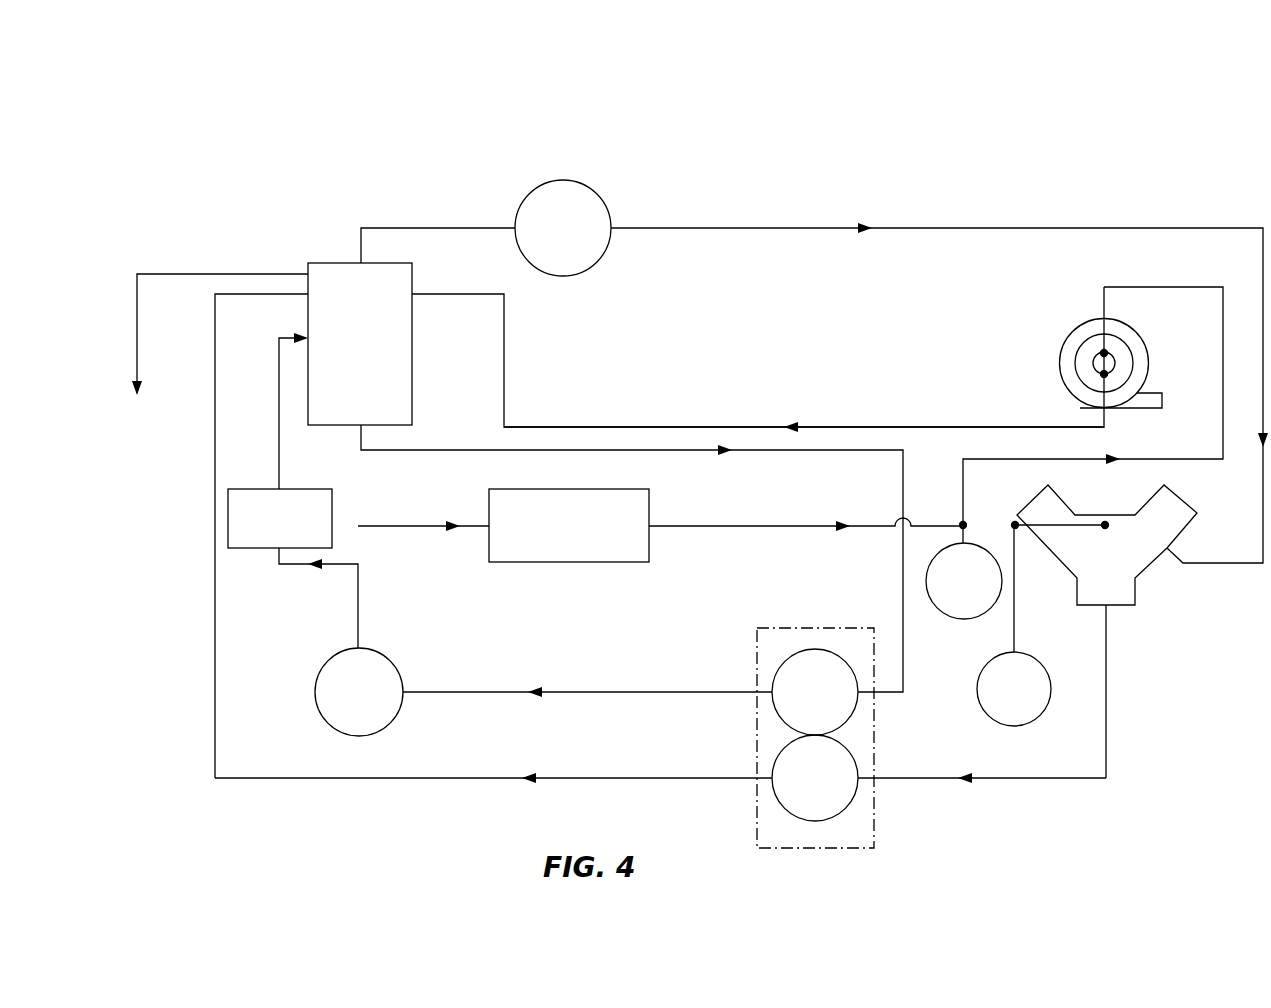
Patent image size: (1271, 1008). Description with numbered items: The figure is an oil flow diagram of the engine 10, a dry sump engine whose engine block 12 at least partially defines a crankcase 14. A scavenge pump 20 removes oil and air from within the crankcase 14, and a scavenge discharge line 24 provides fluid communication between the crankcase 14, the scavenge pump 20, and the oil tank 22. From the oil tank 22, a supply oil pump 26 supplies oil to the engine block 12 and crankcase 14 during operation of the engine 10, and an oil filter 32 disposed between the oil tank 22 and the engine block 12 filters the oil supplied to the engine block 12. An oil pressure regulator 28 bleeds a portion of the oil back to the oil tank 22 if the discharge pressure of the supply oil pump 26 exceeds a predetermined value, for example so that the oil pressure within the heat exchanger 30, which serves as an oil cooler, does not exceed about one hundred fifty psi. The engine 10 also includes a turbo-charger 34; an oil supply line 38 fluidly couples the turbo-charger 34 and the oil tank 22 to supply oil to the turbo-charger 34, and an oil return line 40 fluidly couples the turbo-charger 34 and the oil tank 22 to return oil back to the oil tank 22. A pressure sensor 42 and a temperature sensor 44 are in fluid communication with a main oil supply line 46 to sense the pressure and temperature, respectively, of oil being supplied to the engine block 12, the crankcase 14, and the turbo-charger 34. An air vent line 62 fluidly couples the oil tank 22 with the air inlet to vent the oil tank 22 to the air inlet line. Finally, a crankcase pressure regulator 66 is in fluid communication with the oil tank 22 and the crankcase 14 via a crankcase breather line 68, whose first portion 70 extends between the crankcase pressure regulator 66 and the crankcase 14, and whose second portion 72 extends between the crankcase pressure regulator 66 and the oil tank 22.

The engine 10 is at (1097, 108).
The engine block 12 is at (1180, 545).
The crankcase 14 is at (1137, 592).
The scavenge pump 20 is at (805, 818).
The oil tank 22 is at (328, 262).
The scavenge discharge line 24 is at (352, 782).
The supply oil pump 26 is at (800, 660).
The oil pressure regulator 28 is at (312, 488).
The heat exchanger 30 is at (510, 562).
The oil filter 32 is at (392, 666).
The turbo-charger 34 is at (1062, 352).
The oil supply line 38 is at (1012, 457).
The oil return line 40 is at (777, 425).
The pressure sensor 42 is at (941, 613).
The temperature sensor 44 is at (977, 700).
The main oil supply line 46 is at (792, 525).
The air vent line 62 is at (137, 338).
The crankcase pressure regulator 66 is at (566, 182).
The crankcase breather line 68 is at (455, 227).
The first portion 70 is at (917, 227).
The second portion 72 is at (400, 226).